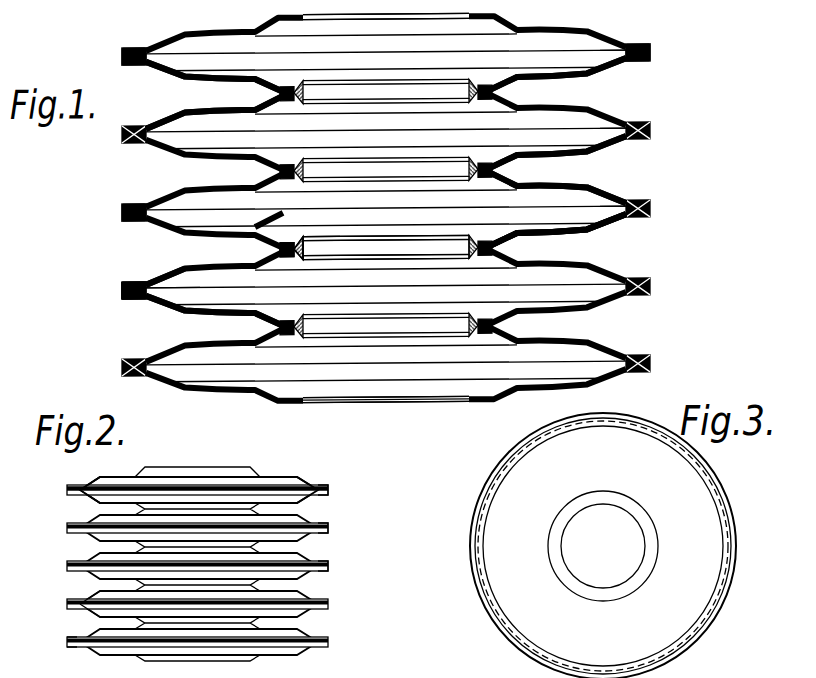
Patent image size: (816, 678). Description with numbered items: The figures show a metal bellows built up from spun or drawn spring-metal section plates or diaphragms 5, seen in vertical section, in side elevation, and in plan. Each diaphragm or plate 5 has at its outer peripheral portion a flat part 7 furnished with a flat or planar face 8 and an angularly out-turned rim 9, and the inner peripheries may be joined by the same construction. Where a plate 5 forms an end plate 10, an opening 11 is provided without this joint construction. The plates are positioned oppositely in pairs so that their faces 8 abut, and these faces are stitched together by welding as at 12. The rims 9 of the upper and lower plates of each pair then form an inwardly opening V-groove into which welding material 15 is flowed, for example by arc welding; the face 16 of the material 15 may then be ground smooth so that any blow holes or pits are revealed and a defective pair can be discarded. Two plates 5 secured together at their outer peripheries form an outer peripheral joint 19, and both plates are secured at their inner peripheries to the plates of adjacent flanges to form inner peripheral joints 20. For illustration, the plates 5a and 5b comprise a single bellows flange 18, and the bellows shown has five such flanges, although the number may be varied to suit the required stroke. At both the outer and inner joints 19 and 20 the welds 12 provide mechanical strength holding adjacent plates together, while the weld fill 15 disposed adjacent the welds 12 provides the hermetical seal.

In FIG. 1, the diaphragm or plate 5 is at (182, 114).
In FIG. 2, the diaphragm or plate 5 is at (278, 496).
In FIG. 1, the plate of a bellows flange 5a is at (609, 182).
In FIG. 1, the plate of a bellows flange 5b is at (606, 234).
In FIG. 1, the flat part 7 is at (135, 281).
In FIG. 3, the flat part 7 is at (725, 515).
In FIG. 1, the flat or planar face 8 is at (148, 283).
In FIG. 1, the angularly out-turned rim 9 is at (127, 283).
In FIG. 2, the angularly out-turned rim 9 is at (310, 488).
In FIG. 3, the angularly out-turned rim 9 is at (720, 484).
In FIG. 1, the end plate 10 is at (506, 27).
In FIG. 3, the end plate 10 is at (687, 516).
In FIG. 1, the opening 11 is at (402, 407).
In FIG. 3, the opening 11 is at (624, 556).
In FIG. 1, the weld 12 is at (134, 48).
In FIG. 3, the weld 12 is at (727, 567).
In FIG. 1, the welding material 15 is at (122, 290).
In FIG. 2, the welding material 15 is at (326, 477).
In FIG. 1, the face of the welding material 16 is at (120, 296).
In FIG. 1, the bellows flange 18 is at (627, 106).
In FIG. 2, the bellows flange 18 is at (80, 500).
In FIG. 1, the outer peripheral joint 19 is at (660, 60).
In FIG. 2, the outer peripheral joint 19 is at (330, 519).
In FIG. 1, the inner peripheral joint 20 is at (358, 251).